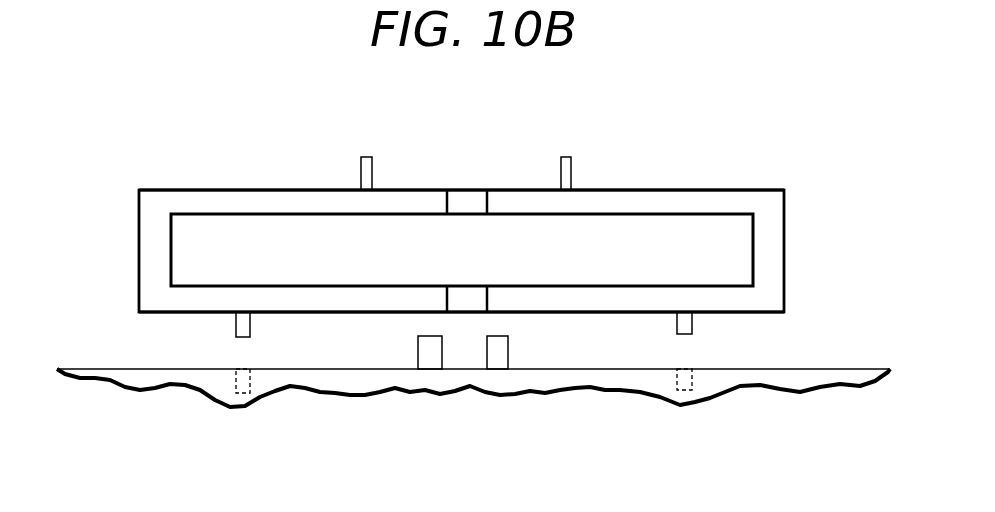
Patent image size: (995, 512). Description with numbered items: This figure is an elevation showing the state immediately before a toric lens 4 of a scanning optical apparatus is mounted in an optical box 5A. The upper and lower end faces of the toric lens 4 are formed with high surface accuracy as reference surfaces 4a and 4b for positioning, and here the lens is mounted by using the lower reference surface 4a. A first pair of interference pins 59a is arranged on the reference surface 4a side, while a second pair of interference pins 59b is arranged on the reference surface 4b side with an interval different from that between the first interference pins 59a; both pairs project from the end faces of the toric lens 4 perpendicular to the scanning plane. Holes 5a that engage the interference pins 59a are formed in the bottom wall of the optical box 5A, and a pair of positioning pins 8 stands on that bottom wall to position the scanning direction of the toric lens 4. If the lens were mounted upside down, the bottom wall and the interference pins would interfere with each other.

The toric lens 4 is at (501, 273).
The reference surface 4a is at (750, 322).
The reference surface 4b is at (744, 184).
The first pair of interference pins 59a is at (245, 337).
The second pair of interference pins 59b is at (366, 157).
The optical box 5A is at (473, 405).
The holes 5a is at (242, 395).
The positioning pins 8 is at (496, 358).